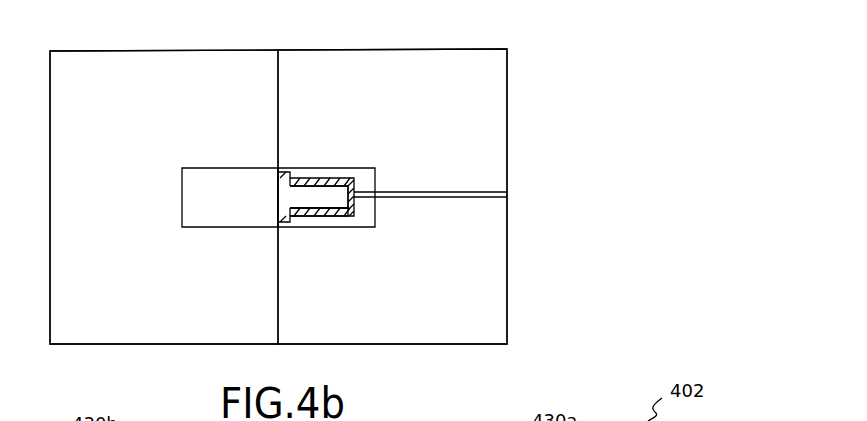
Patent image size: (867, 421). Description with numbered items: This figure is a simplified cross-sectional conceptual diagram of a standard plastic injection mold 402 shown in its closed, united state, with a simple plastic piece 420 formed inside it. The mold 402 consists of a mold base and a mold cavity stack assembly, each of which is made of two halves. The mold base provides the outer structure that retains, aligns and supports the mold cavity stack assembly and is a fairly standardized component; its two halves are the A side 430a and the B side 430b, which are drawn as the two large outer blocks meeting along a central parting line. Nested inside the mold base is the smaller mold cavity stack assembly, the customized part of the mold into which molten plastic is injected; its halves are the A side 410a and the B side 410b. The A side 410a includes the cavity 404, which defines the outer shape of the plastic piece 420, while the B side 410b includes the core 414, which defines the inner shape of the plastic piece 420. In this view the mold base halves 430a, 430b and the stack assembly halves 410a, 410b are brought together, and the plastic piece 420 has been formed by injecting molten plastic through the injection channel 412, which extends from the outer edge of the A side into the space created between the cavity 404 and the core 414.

The plastic injection mold 402 is at (534, 57).
The B side of mold base 430b is at (105, 51).
The A side of mold base 430a is at (462, 48).
The B side of mold cavity stack assembly 410b is at (213, 167).
The A side of mold cavity stack assembly 410a is at (355, 166).
The plastic piece 420 is at (318, 178).
The core 414 is at (300, 188).
The cavity 404 is at (335, 216).
The injection channel 412 is at (437, 192).